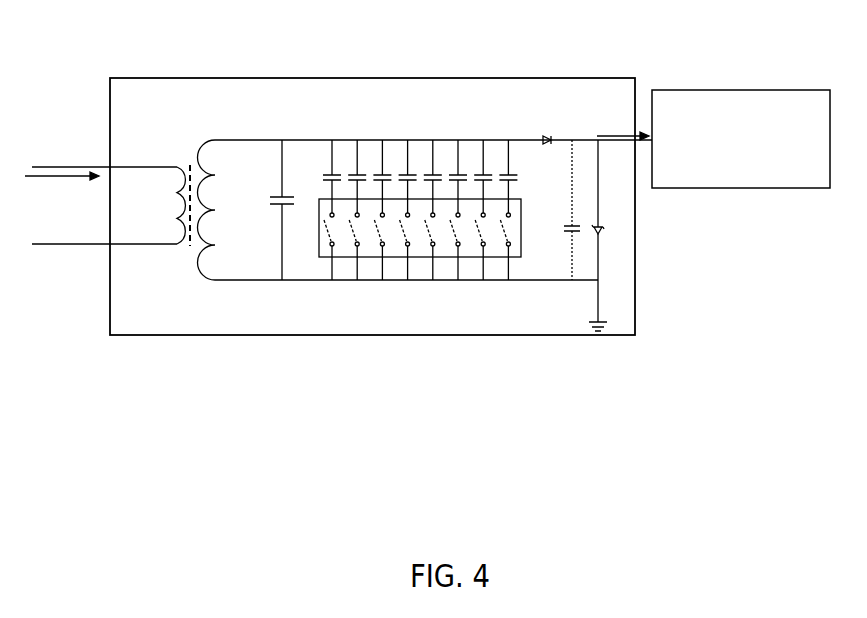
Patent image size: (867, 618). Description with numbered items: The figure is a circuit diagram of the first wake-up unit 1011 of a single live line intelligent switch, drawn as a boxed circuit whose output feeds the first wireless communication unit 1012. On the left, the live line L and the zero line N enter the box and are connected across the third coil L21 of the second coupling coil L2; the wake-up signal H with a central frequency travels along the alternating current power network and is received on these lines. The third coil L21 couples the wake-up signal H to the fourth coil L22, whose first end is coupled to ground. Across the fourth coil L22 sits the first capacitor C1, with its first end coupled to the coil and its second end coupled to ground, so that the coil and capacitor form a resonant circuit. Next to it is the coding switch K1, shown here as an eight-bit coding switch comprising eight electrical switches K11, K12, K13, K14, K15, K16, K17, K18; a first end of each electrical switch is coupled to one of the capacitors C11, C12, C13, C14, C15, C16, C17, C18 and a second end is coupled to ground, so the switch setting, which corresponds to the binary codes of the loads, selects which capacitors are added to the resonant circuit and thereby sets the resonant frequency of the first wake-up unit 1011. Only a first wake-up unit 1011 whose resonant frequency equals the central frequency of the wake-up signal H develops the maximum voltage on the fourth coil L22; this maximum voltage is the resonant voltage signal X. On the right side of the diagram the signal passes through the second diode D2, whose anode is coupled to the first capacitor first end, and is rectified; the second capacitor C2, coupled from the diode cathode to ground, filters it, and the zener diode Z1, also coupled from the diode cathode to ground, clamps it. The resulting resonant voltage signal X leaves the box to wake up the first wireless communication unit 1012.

The first wake-up unit 1011 is at (303, 78).
The first wireless communication unit 1012 is at (721, 88).
The live line L is at (104, 155).
The wake-up signal H is at (62, 189).
The zero line N is at (104, 258).
The second coupling coil L2 is at (195, 207).
The third coil L21 is at (161, 205).
The fourth coil L22 is at (225, 210).
The first capacitor C1 is at (273, 210).
The coding switch K1 is at (408, 228).
The capacitor C11 is at (325, 167).
The capacitor C12 is at (351, 167).
The capacitor C13 is at (380, 167).
The capacitor C14 is at (407, 167).
The capacitor C15 is at (433, 167).
The capacitor C16 is at (460, 167).
The capacitor C17 is at (490, 167).
The capacitor C18 is at (517, 167).
The electrical switch K11 is at (324, 261).
The electrical switch K12 is at (352, 261).
The electrical switch K13 is at (381, 261).
The electrical switch K14 is at (407, 261).
The electrical switch K15 is at (433, 261).
The electrical switch K16 is at (460, 261).
The electrical switch K17 is at (489, 261).
The electrical switch K18 is at (516, 261).
The second diode D2 is at (546, 157).
The second capacitor C2 is at (556, 210).
The zener diode Z1 is at (608, 235).
The resonant voltage signal X is at (623, 126).